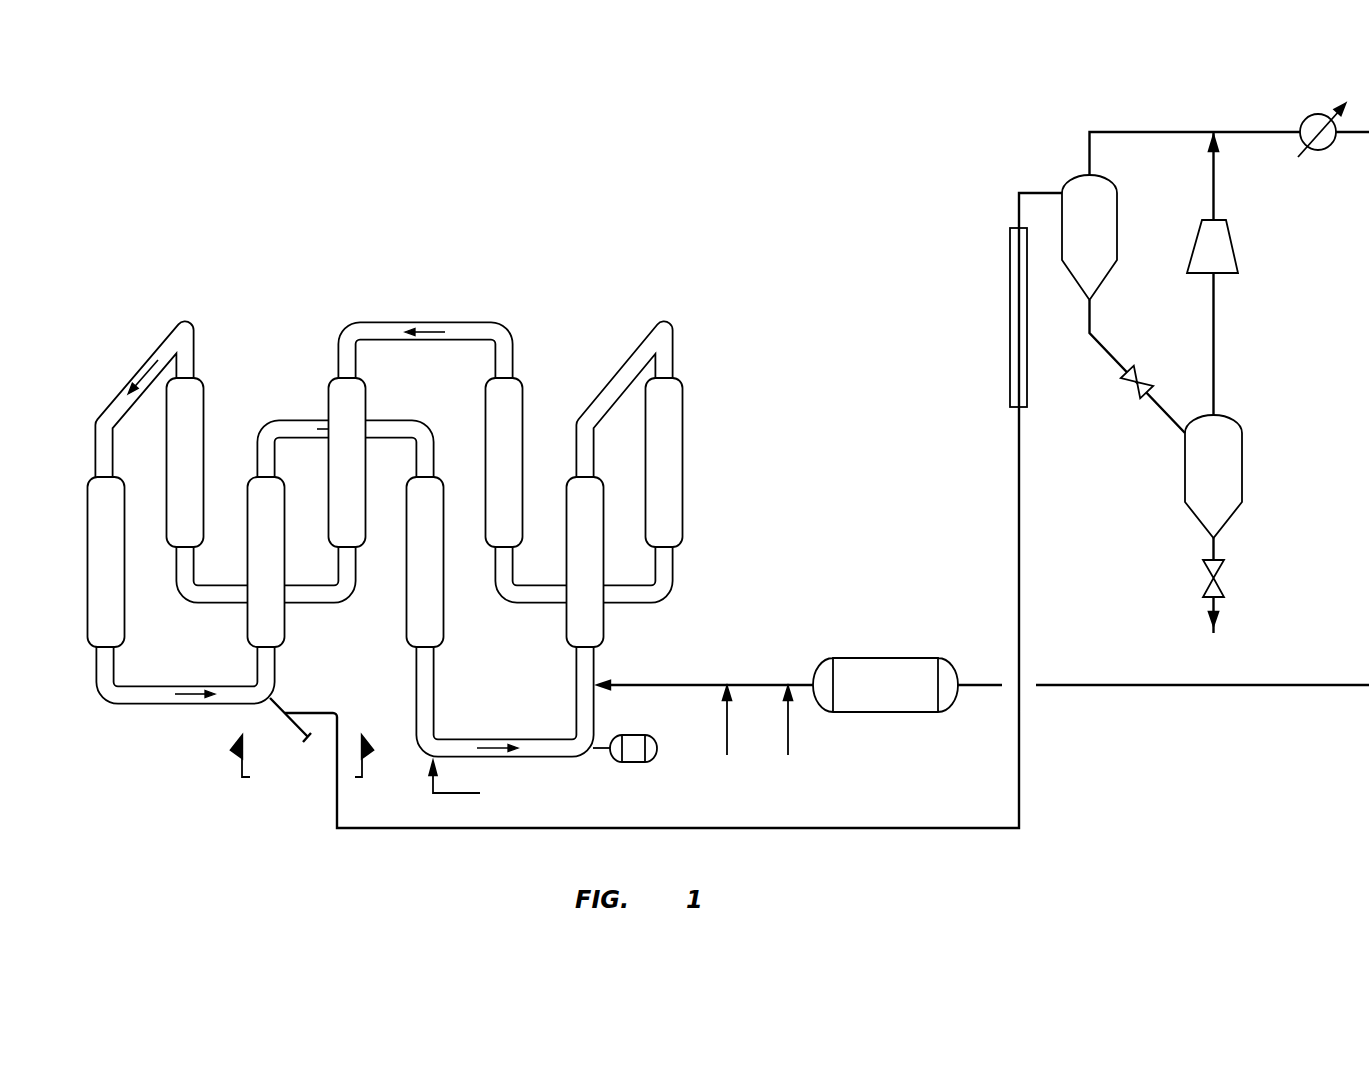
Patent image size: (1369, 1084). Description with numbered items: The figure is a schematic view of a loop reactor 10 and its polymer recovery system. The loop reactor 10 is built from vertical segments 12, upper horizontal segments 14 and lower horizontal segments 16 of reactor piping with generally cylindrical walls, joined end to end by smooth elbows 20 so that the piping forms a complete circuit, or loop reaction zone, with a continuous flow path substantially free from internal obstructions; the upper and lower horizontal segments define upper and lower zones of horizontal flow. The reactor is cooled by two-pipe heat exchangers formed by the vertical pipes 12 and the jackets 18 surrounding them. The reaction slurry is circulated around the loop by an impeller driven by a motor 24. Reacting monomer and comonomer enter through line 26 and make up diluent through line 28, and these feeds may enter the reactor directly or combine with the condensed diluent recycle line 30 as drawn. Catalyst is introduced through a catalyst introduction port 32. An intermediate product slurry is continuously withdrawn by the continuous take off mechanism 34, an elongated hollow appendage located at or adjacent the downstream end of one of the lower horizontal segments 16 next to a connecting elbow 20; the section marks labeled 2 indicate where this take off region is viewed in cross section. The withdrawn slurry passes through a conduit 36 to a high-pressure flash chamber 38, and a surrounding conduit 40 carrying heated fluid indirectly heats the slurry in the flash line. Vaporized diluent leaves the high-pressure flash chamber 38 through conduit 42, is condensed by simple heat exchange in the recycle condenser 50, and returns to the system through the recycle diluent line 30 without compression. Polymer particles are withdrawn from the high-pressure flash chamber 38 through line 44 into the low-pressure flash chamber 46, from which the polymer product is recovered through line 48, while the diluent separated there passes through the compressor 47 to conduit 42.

The section line 2- 2 is at (300, 760).
The loop reactor 10 is at (402, 255).
The vertical segments 12 is at (95, 667).
The upper horizontal segments 14 is at (160, 342).
The lower horizontal segments 16 is at (633, 606).
The jackets 18 is at (87, 498).
The elbow 20 is at (253, 688).
The motor 24 is at (630, 763).
The line 26 is at (788, 735).
The line 28 is at (727, 735).
The recycle diluent line 30 is at (703, 683).
The catalyst introduction port 32 is at (475, 785).
The continuous take off mechanism 34 is at (290, 708).
The conduit 36 is at (1018, 555).
The high-pressure flash chamber 38 is at (1073, 238).
The surrounding conduit 40 is at (1008, 278).
The conduit 42 is at (1138, 132).
The line 44 is at (1105, 346).
The low-pressure flash chamber 46 is at (1196, 472).
The compressor 47 is at (1237, 250).
The line 48 is at (1218, 612).
The recycle condenser 50 is at (1318, 113).